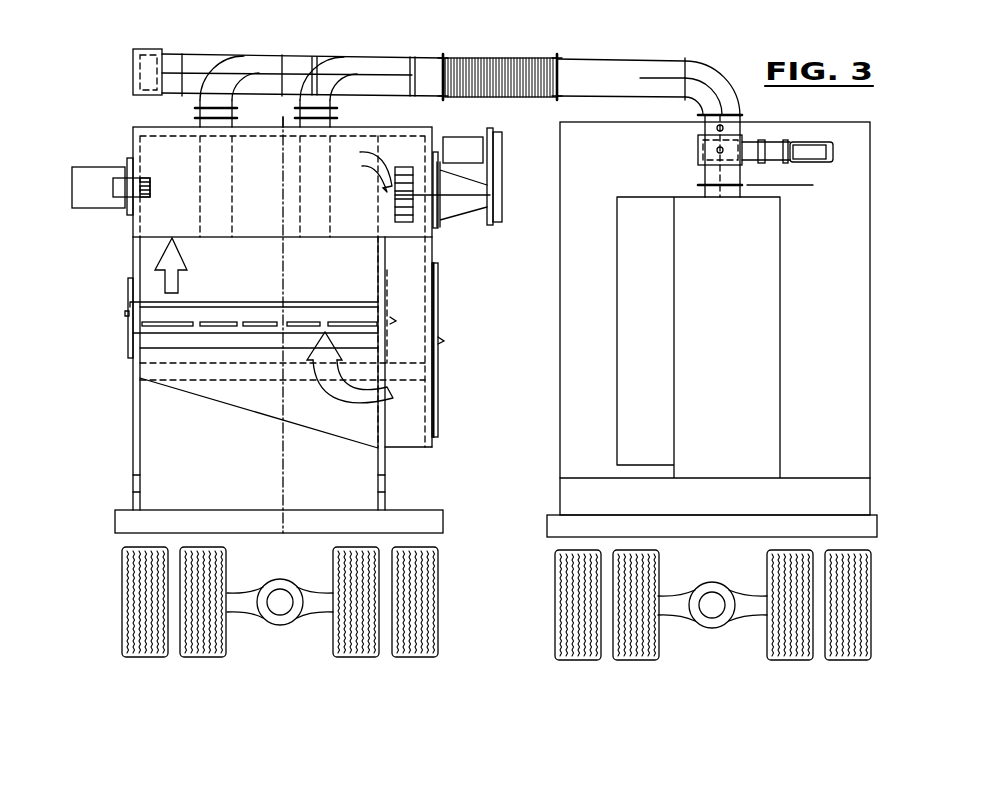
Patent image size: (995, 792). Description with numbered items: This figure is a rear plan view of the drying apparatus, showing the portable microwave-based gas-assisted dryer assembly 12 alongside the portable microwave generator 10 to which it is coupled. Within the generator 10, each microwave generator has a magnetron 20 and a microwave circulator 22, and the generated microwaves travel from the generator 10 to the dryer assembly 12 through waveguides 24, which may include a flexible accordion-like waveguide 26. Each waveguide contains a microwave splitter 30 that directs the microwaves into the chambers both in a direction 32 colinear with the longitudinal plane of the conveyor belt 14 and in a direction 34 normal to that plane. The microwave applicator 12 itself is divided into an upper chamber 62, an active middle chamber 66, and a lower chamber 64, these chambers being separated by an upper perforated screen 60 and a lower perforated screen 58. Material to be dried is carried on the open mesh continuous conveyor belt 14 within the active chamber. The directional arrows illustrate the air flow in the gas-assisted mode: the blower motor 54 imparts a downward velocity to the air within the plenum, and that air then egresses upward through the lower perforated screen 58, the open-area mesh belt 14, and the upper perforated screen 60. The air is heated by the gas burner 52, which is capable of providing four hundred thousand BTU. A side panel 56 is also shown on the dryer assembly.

The portable microwave generator 10 is at (882, 421).
The microwave-based gas-assisted dryer assembly 12 is at (100, 432).
The open mesh continuous conveyor belt 14 is at (133, 333).
The magnetron 20 is at (810, 165).
The microwave circulator 22 is at (698, 157).
The waveguide 24 is at (598, 60).
The flexible accordion-like waveguide 26 is at (512, 58).
The microwave splitter 30 is at (367, 62).
The colinear direction 32 is at (218, 200).
The normal direction 34 is at (320, 188).
The gas burner 52 is at (87, 167).
The blower motor 54 is at (448, 220).
The side panel 56 is at (440, 387).
The lower perforated screen 58 is at (153, 352).
The upper perforated screen 60 is at (133, 266).
The upper chamber 62 is at (184, 165).
The lower chamber 64 is at (319, 423).
The active middle chamber 66 is at (254, 284).